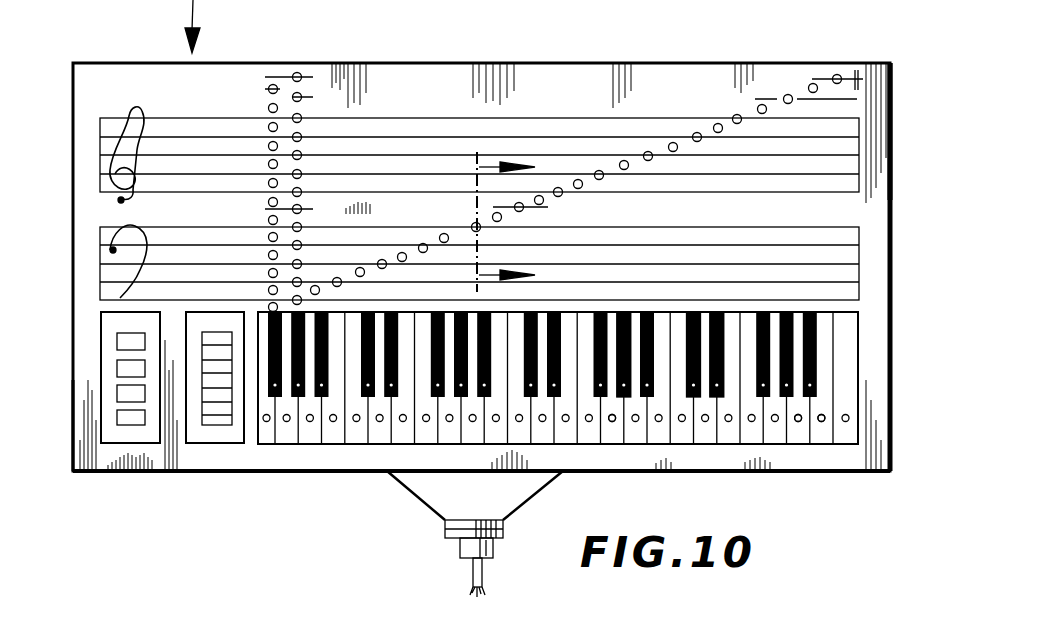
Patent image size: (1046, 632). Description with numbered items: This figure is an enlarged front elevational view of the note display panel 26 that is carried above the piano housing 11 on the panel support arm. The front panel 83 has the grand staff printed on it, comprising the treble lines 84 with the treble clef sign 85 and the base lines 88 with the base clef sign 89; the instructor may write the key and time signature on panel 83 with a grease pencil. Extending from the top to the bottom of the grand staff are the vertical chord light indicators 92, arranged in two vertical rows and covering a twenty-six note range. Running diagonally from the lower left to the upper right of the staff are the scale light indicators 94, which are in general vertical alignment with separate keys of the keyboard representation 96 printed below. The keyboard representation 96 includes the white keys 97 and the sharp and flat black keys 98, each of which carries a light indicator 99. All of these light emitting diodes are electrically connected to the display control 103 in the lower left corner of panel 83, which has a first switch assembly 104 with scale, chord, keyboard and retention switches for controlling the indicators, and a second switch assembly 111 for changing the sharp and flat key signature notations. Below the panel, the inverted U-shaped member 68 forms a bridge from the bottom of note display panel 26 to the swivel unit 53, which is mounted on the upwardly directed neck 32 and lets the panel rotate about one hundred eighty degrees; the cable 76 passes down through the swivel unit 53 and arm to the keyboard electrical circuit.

The front panel 83 is at (100, 70).
The treble lines 84 is at (100, 144).
The treble clef sign 85 is at (127, 108).
The base lines 88 is at (100, 272).
The base clef sign 89 is at (100, 237).
The vertical chord light indicators 92 is at (297, 72).
The scale light indicators 94 is at (697, 132).
The housing 11 is at (479, 223).
The keyboard representation 96 is at (860, 362).
The white keys 97 is at (798, 430).
The sharp and flat black keys 98 is at (697, 392).
The light indicator 99 is at (613, 424).
The first switch assembly 104 is at (100, 355).
The second switch assembly 111 is at (211, 445).
The display control 103 is at (62, 465).
The note display panel 26 is at (908, 100).
The inverted U-shaped member 68 is at (425, 490).
The swivel unit 53 is at (435, 533).
The neck 32 is at (460, 542).
The cable 76 is at (483, 572).